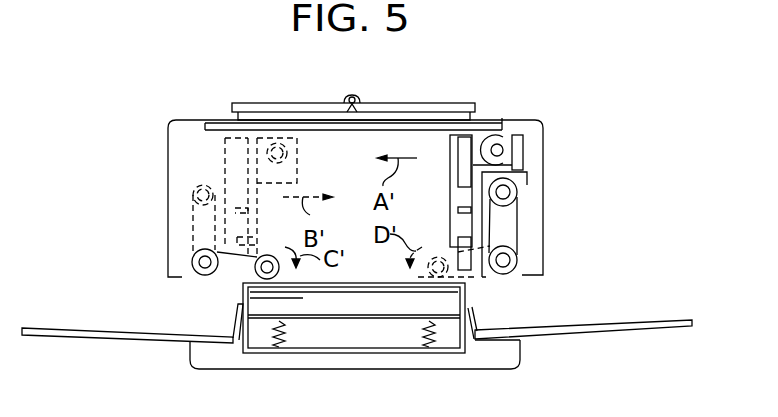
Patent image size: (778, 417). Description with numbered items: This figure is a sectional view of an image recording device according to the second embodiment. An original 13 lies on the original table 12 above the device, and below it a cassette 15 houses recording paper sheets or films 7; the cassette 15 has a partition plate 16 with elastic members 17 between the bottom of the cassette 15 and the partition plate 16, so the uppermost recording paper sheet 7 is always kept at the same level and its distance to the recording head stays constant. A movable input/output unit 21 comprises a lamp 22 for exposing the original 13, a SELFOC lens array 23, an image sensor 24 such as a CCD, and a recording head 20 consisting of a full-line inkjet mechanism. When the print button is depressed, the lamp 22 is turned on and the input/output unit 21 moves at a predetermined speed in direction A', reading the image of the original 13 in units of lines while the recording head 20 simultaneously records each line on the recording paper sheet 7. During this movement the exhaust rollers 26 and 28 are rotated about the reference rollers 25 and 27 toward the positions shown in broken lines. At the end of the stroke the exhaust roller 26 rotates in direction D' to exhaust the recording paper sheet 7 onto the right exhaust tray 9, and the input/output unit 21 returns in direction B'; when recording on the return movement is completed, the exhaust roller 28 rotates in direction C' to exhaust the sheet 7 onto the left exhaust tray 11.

The recording paper sheet 7 is at (365, 290).
The right exhaust tray 9 is at (622, 320).
The left exhaust tray 11 is at (83, 328).
The original table 12 is at (220, 122).
The original 13 is at (310, 103).
The cassette 15 is at (470, 345).
The partition plate 16 is at (355, 320).
The elastic members 17 is at (285, 333).
The recording head 20 is at (474, 264).
The input/output unit 21 is at (513, 135).
The lamp 22 is at (505, 150).
The SELFOC lens array 23 is at (527, 177).
The image sensor 24 is at (458, 210).
The reference roller 25 is at (517, 258).
The exhaust roller 26 is at (518, 199).
The reference roller 27 is at (192, 262).
The exhaust roller 28 is at (256, 270).